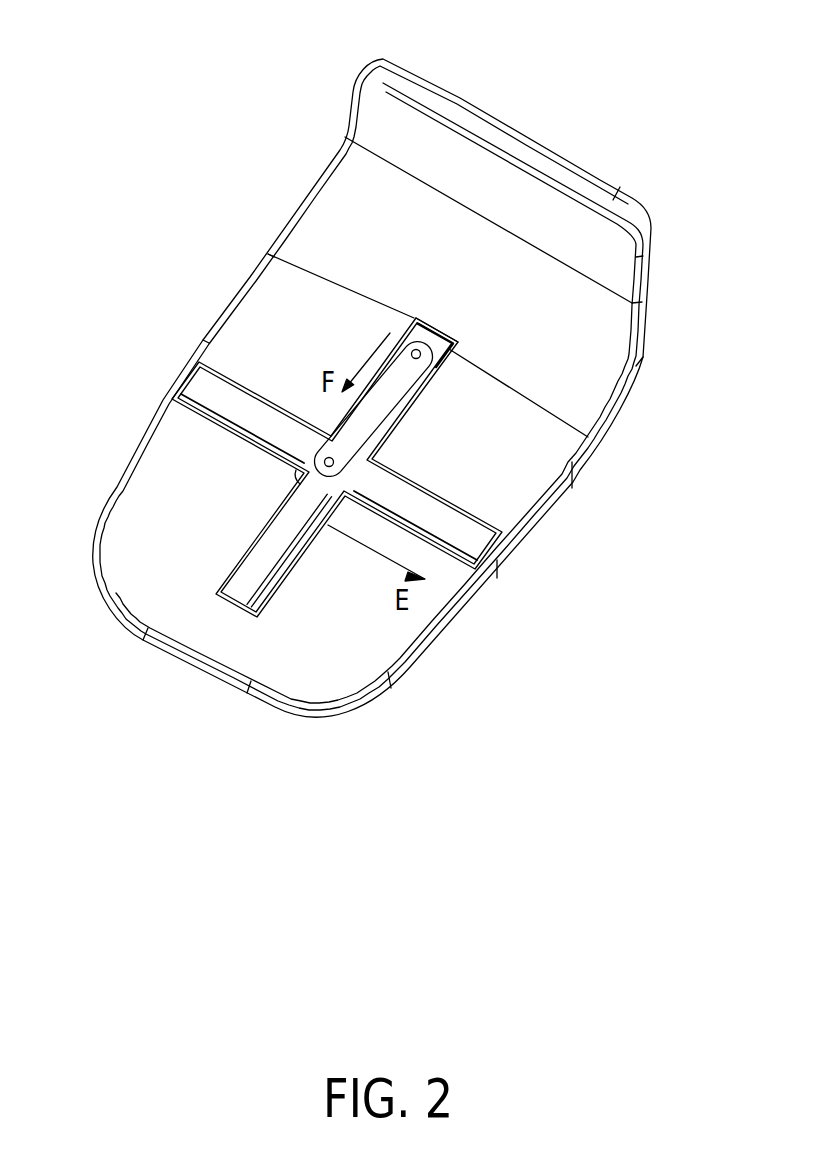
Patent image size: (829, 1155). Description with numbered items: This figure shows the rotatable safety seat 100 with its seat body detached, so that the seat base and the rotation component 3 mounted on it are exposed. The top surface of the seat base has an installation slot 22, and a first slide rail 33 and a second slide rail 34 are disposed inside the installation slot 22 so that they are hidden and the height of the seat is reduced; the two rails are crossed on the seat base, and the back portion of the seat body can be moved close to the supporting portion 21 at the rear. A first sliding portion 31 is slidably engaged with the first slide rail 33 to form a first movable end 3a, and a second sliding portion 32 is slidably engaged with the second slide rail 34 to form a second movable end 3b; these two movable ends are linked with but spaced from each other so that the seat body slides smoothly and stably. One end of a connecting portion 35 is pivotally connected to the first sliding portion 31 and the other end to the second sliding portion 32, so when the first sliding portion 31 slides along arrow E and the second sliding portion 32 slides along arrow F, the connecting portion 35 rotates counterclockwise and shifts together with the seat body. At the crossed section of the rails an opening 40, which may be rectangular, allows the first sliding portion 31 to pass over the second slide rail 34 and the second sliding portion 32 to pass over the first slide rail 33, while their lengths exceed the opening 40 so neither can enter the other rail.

The rotatable safety seat 100 is at (191, 32).
The supporting portion 21 is at (483, 190).
The installation slot 22 is at (267, 614).
The rotation component 3 is at (406, 464).
The first movable end 3a is at (268, 482).
The second movable end 3b is at (422, 296).
The first sliding portion 31 is at (342, 488).
The second sliding portion 32 is at (447, 356).
The first slide rail 33 is at (433, 528).
The second slide rail 34 is at (270, 560).
The connecting portion 35 is at (373, 410).
The opening 40 is at (288, 495).